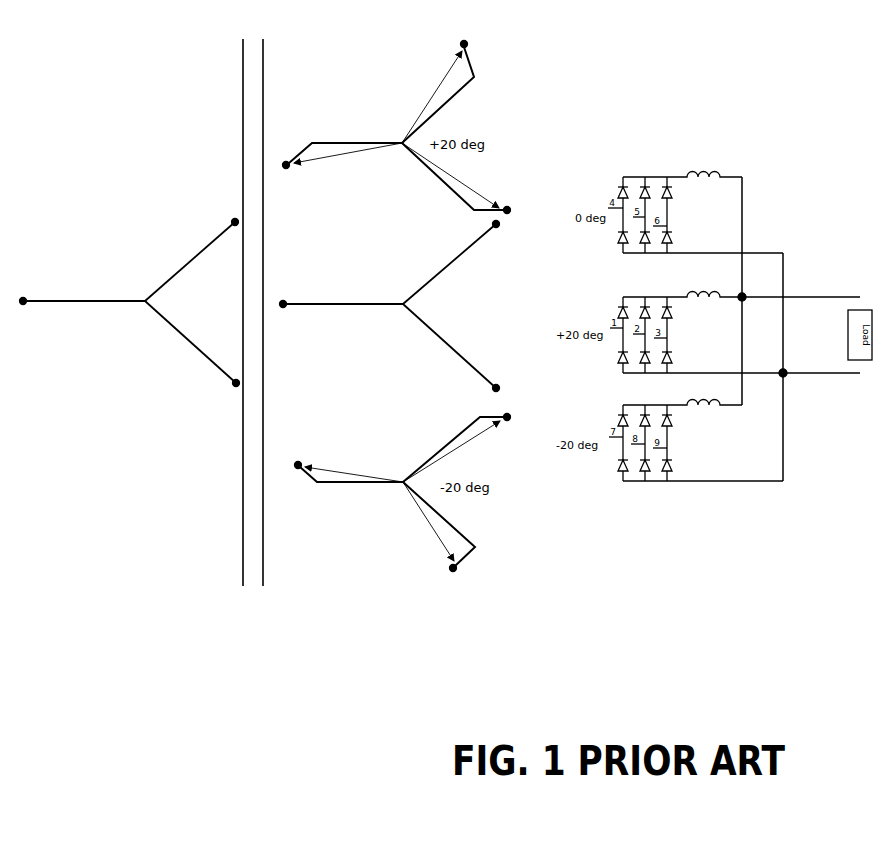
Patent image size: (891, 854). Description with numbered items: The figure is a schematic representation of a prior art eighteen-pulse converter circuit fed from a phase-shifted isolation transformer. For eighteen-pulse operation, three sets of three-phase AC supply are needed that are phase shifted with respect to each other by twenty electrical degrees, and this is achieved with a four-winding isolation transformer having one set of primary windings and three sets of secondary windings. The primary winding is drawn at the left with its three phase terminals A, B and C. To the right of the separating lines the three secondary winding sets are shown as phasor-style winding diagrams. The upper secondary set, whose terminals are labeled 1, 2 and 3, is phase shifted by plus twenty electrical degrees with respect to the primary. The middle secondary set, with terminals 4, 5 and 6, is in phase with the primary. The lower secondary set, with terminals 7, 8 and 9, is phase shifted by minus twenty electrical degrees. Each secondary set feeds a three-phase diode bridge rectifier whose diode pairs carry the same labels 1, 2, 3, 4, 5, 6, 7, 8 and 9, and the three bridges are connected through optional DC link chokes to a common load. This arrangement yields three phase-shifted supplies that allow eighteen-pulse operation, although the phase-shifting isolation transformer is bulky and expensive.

The phase A terminal of delta primary winding A is at (23, 294).
The phase B terminal of delta primary winding B is at (233, 214).
The phase C terminal of delta primary winding C is at (235, 392).
The secondary winding terminal 1 (+20 deg zigzag) 1 is at (438, 83).
The secondary winding terminal 2 (+20 deg zigzag) 2 is at (456, 178).
The secondary winding terminal 3 (+20 deg zigzag) 3 is at (343, 166).
The secondary winding terminal 4 (0 deg wye) 4 is at (451, 263).
The secondary winding terminal 5 (0 deg wye) 5 is at (453, 348).
The secondary winding terminal 6 (0 deg wye) 6 is at (284, 296).
The secondary winding terminal 7 (-20 deg zigzag) 7 is at (464, 446).
The secondary winding terminal 8 (-20 deg zigzag) 8 is at (439, 536).
The secondary winding terminal 9 (-20 deg zigzag) 9 is at (348, 465).